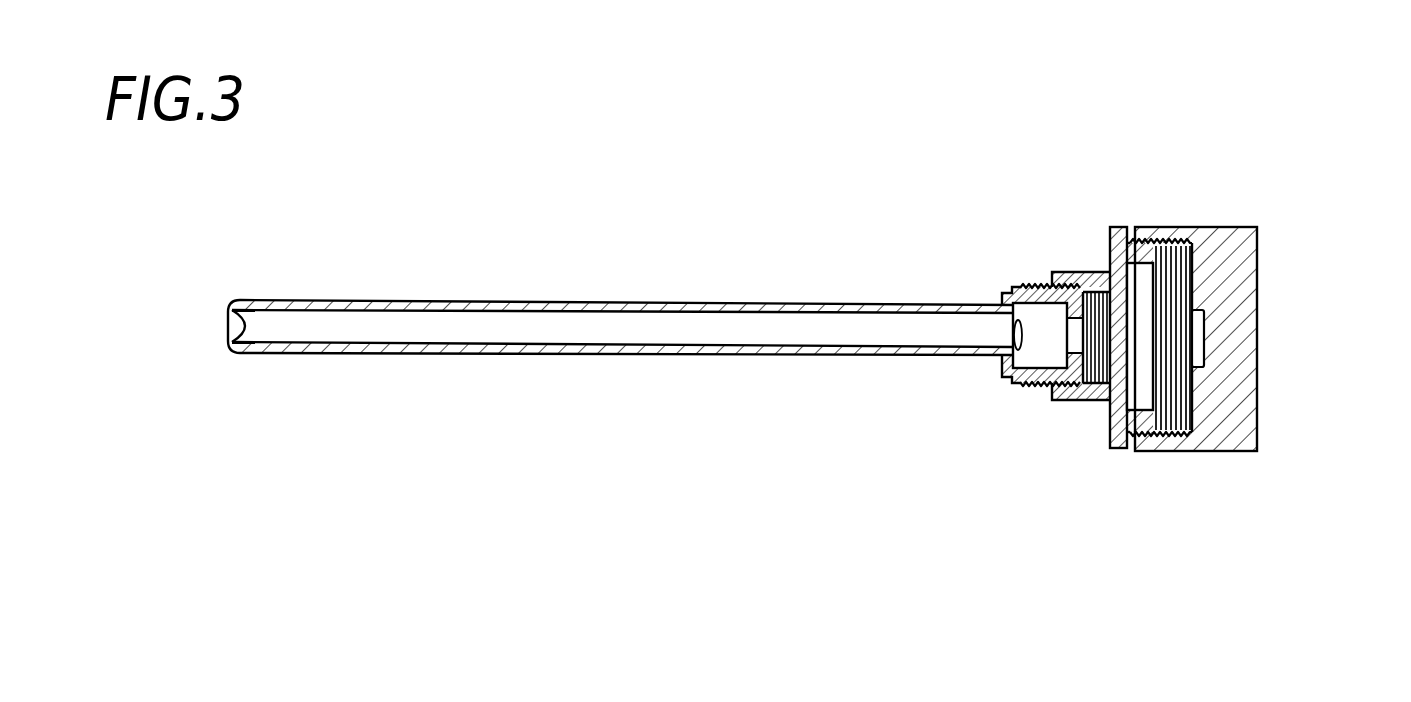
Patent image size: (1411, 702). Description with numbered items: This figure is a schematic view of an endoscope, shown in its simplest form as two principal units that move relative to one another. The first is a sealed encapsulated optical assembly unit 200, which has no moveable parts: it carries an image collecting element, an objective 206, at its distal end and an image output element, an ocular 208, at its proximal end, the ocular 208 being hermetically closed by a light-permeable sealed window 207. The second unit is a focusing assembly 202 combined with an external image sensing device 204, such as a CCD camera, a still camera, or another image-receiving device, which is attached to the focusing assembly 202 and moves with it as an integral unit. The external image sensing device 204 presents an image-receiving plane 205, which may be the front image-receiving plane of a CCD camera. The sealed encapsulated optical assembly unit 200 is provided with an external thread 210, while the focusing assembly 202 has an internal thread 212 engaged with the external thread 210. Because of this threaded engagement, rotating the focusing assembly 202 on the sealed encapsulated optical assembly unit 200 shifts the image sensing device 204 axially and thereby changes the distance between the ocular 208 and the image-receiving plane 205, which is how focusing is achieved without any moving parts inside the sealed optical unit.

The sealed encapsulated optical assembly unit 200 is at (692, 302).
The focusing assembly 202 is at (1122, 227).
The external image sensing device 204 is at (1213, 452).
The image-receiving plane 205 is at (1200, 340).
The objective 206 is at (233, 328).
The light-permeable sealed window 207 is at (1077, 342).
The ocular 208 is at (1016, 382).
The external thread 210 is at (1030, 386).
The internal thread 212 is at (1067, 271).